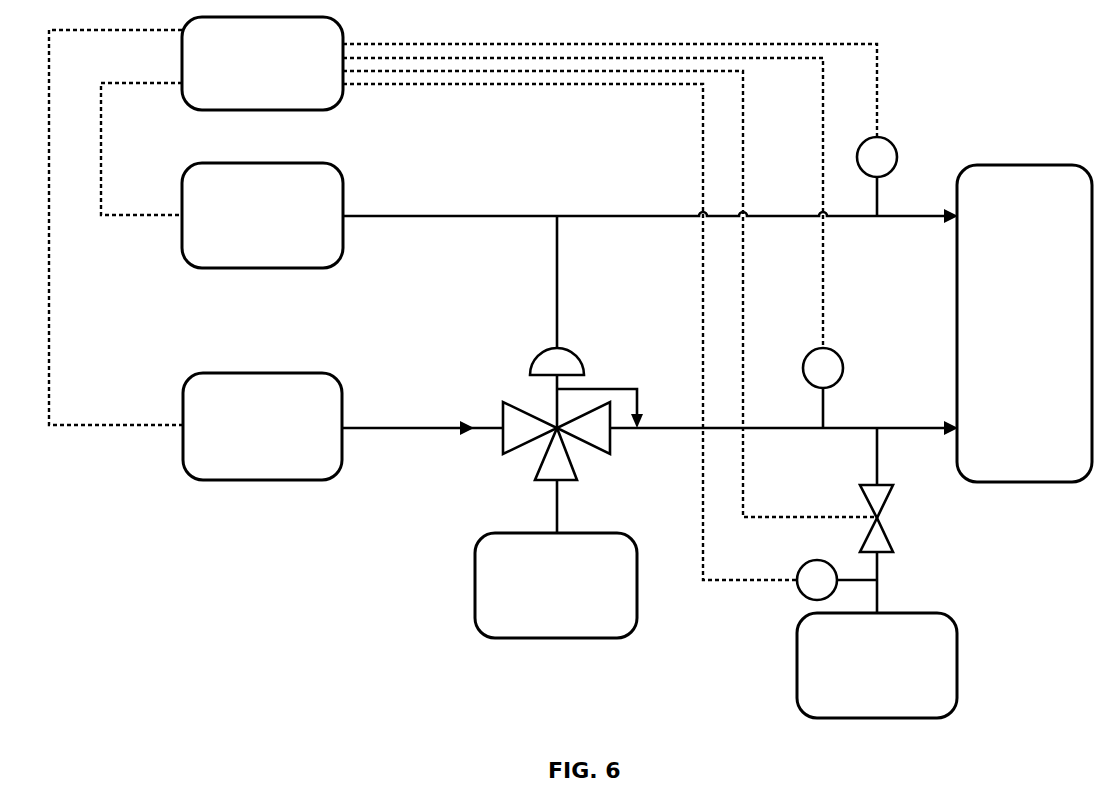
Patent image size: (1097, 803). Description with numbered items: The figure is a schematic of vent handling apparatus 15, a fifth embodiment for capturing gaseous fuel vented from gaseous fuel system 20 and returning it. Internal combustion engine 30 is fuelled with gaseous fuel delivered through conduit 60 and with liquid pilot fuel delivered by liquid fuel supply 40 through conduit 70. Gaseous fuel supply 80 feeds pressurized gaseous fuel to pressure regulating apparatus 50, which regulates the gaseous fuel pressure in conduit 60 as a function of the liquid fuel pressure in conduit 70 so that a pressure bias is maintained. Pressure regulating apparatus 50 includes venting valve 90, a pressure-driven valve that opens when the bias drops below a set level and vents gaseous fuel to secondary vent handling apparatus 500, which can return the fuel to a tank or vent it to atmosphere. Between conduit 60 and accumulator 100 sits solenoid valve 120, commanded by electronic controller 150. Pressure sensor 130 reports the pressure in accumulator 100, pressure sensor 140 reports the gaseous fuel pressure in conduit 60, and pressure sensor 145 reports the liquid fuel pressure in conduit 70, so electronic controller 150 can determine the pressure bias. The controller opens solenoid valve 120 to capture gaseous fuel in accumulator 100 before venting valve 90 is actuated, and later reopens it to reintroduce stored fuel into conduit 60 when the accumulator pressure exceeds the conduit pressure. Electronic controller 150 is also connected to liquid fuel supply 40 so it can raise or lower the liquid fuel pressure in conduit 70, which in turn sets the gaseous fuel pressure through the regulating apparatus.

The vent handling apparatus 15 is at (970, 578).
The gaseous fuel system 20 is at (866, 376).
The internal combustion engine 30 is at (1010, 334).
The liquid fuel supply 40 is at (250, 226).
The pressure regulating apparatus 50 is at (502, 392).
The conduit 60 is at (800, 428).
The conduit 70 is at (627, 218).
The gaseous fuel supply 80 is at (250, 438).
The venting valve 90 is at (538, 463).
The accumulator 100 is at (859, 676).
The solenoid valve 120 is at (885, 505).
The pressure sensor 130 is at (815, 560).
The pressure sensor 140 is at (805, 360).
The pressure sensor 145 is at (897, 157).
The electronic controller 150 is at (244, 74).
The secondary vent handling apparatus 500 is at (539, 599).